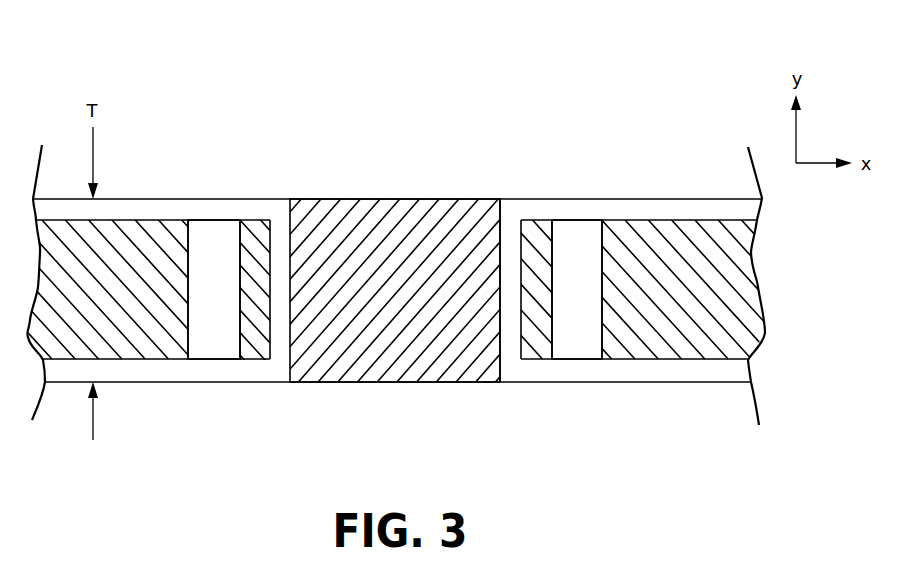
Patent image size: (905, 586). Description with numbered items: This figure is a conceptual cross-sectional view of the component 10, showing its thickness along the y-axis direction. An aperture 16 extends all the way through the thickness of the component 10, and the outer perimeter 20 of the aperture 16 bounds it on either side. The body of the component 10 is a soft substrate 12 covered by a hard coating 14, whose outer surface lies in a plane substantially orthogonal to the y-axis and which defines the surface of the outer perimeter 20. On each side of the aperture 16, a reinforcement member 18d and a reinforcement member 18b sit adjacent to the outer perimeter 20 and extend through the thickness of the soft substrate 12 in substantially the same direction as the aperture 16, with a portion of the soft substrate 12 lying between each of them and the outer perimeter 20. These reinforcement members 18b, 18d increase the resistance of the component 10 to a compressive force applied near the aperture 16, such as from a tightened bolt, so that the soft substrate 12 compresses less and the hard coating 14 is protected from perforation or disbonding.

The component 10 is at (156, 62).
The soft substrate 12 is at (96, 312).
The hard coating 14 is at (568, 198).
The aperture 16 is at (368, 186).
The reinforcement member 18b is at (568, 337).
The reinforcement member 18d is at (223, 337).
The outer perimeter 20 is at (497, 248).